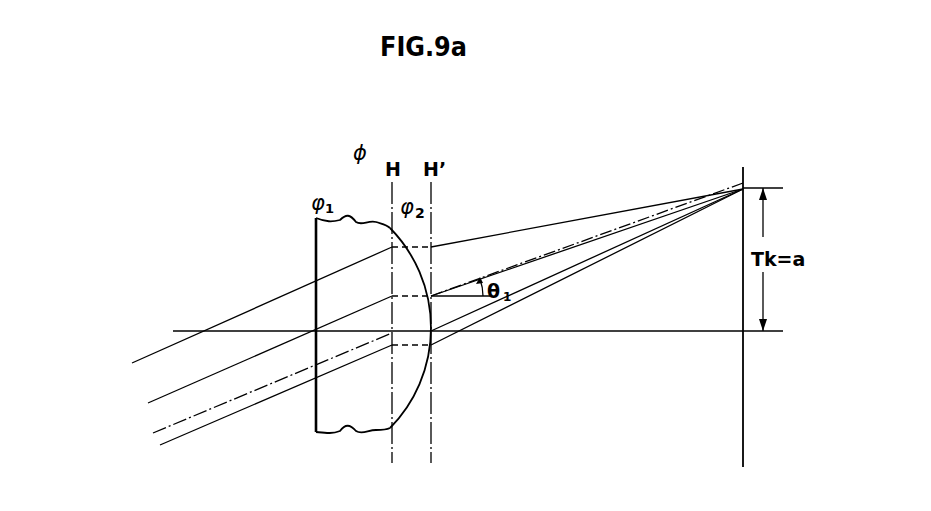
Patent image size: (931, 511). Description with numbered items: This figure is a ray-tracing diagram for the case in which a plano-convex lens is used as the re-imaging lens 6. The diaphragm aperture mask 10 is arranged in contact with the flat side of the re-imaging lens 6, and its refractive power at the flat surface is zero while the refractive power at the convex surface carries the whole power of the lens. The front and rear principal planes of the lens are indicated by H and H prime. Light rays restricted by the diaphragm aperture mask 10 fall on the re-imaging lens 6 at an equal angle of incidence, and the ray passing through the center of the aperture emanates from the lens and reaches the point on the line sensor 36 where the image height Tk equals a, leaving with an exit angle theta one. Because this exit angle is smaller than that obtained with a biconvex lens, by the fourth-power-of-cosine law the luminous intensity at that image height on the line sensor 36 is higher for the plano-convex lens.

The diaphragm aperture mask 10 is at (369, 339).
The re-imaging lens 6 is at (407, 408).
The line sensor 36 is at (743, 430).